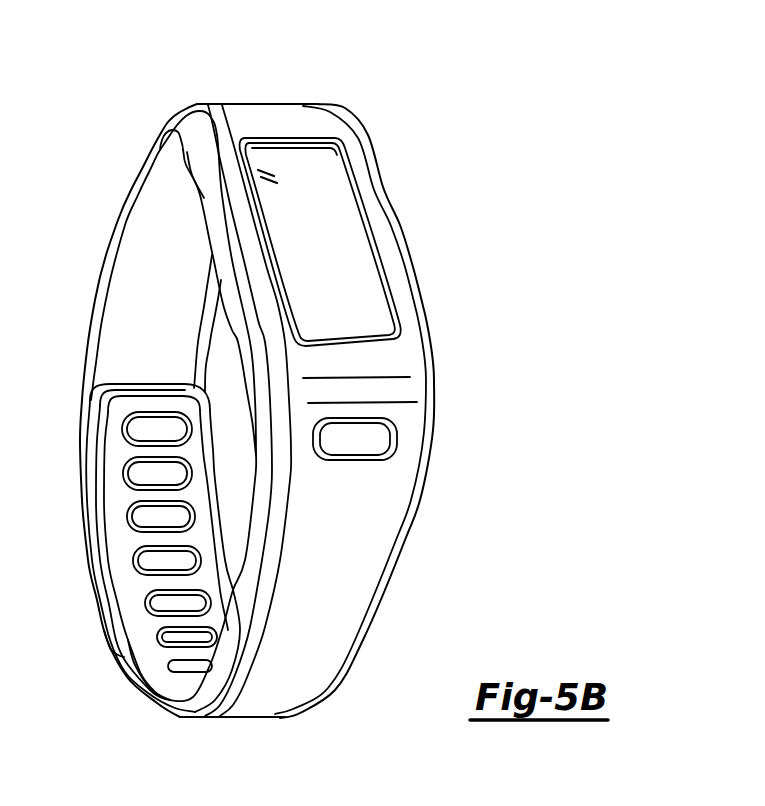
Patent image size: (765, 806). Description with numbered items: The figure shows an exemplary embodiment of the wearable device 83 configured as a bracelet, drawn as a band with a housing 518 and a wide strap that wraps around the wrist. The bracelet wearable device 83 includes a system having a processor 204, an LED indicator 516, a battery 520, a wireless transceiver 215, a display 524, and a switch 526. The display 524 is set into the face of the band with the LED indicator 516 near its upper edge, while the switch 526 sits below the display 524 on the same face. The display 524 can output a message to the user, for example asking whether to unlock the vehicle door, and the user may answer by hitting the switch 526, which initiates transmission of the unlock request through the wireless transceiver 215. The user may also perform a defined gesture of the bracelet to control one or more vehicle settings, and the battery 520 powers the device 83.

The wearable device 83 is at (420, 88).
The processor 204 is at (202, 190).
The wireless transceiver 215 is at (359, 577).
The LED indicator 516 is at (270, 165).
The band body housing 518 is at (375, 545).
The battery 520 is at (214, 236).
The display 524 is at (332, 193).
The switch 526 is at (378, 436).